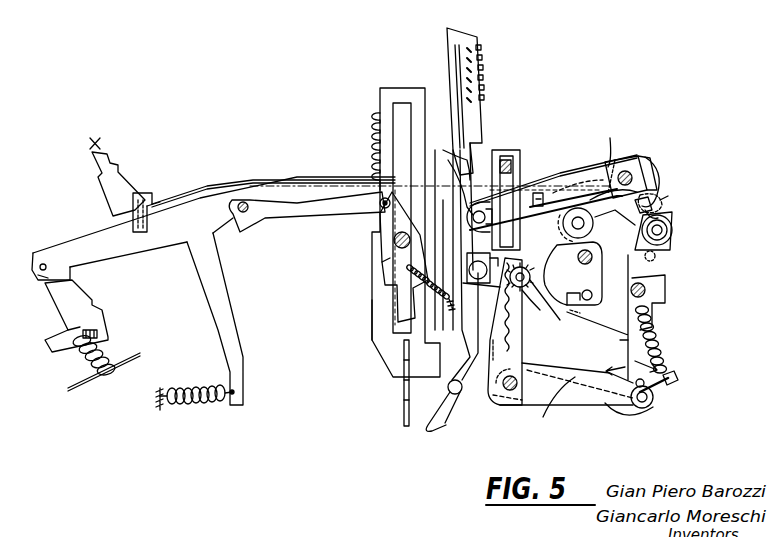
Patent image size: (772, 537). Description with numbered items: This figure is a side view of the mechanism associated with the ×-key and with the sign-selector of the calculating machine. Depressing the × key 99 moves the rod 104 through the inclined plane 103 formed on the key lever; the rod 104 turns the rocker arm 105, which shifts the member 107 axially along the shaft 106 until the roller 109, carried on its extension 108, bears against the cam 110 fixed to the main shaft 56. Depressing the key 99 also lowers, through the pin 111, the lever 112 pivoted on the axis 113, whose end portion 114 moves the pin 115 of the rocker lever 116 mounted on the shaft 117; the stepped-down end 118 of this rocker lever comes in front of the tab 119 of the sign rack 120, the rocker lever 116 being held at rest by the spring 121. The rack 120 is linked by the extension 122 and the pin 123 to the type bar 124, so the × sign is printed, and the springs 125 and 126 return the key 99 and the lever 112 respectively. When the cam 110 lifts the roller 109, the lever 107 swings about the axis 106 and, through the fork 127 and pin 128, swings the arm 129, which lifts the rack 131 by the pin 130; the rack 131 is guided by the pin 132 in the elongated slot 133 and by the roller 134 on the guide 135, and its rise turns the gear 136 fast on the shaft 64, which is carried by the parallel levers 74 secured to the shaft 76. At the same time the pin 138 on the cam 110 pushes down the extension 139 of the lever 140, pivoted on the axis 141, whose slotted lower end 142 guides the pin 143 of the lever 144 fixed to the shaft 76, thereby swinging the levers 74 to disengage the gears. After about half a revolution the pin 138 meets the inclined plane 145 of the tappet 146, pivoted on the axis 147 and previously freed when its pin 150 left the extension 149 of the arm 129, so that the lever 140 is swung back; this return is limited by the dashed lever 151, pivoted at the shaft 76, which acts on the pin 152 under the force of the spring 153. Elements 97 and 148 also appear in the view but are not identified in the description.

The frame 97 is at (161, 5).
The × key 99 is at (105, 152).
The inclined plane 103 is at (152, 235).
The rod 104 is at (144, 192).
The rocker arm 105 is at (355, 180).
The shaft 106 is at (625, 170).
The lever 107 is at (562, 200).
The extension 108 is at (623, 222).
The roller 109 is at (563, 225).
The cam 110 is at (560, 255).
The pin 111 is at (48, 263).
The lever 112 is at (128, 263).
The axis 113 is at (246, 213).
The end portion 114 is at (380, 215).
The pin 115 is at (383, 212).
The rocker lever 116 is at (393, 247).
The shaft 117 is at (405, 275).
The stepped-down end 118 is at (372, 330).
The tab 119 is at (404, 425).
The sign rack 120 is at (400, 90).
The spring 121 is at (408, 275).
The extension 122 is at (432, 428).
The pin 123 is at (456, 395).
The type bar 124 is at (458, 30).
The spring 125 is at (84, 352).
The spring 126 is at (176, 390).
The fork 127 is at (537, 192).
The pin 128 is at (556, 185).
The arm 129 is at (449, 154).
The pin 130 is at (450, 184).
The rack 131 is at (512, 152).
The pin 132 is at (505, 160).
The elongated slot 133 is at (478, 228).
The roller 134 is at (508, 290).
The guide 135 is at (483, 284).
The gear 136 is at (530, 288).
The pin 138 is at (587, 290).
The extension 139 is at (597, 317).
The lever 140 is at (615, 340).
The axis 141 is at (665, 281).
The slotted lower end 142 is at (640, 410).
The pin 143 is at (656, 404).
The lever 144 is at (528, 403).
The inclined plane 145 is at (613, 157).
The tappet 146 is at (655, 206).
The axis 147 is at (672, 237).
The lug 148 is at (655, 216).
The extension 149 is at (663, 198).
The pin 150 is at (662, 195).
The lever 151 is at (548, 398).
The pin 152 is at (666, 382).
The spring 153 is at (660, 335).
The main shaft 56 is at (593, 258).
The shaft 64 is at (534, 306).
The parallel levers 74 is at (518, 352).
The shaft 76 is at (511, 391).